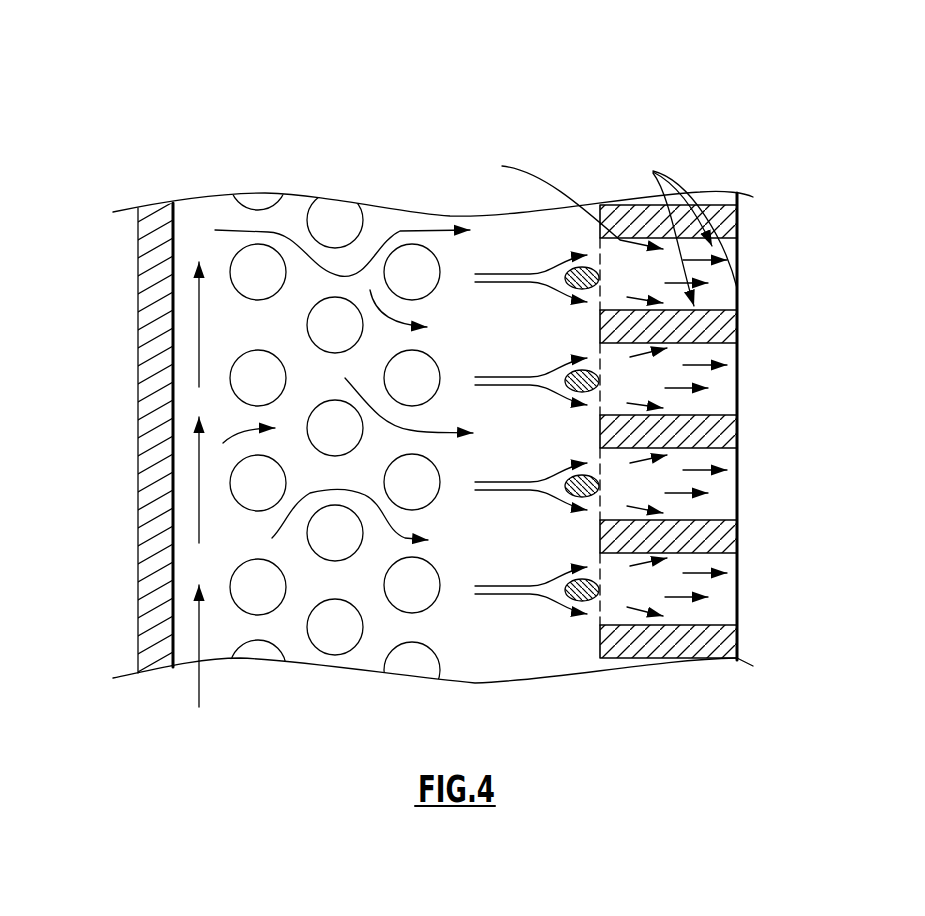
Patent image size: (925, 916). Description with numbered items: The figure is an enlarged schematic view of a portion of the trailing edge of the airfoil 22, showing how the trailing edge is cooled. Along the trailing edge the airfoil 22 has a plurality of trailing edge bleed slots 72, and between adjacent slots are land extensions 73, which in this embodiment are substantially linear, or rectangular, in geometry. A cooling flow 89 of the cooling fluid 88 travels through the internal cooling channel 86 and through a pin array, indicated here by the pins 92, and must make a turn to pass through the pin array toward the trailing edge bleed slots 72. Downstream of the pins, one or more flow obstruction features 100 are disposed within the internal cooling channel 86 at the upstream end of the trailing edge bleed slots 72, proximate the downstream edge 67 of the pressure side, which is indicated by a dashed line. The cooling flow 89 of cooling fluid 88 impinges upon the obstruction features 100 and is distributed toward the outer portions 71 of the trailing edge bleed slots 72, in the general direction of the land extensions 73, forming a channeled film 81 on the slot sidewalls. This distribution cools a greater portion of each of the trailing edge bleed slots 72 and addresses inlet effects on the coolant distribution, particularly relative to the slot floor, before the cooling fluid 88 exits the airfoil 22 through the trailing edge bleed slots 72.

The airfoil 22 is at (115, 74).
The internal cooling channel 86 is at (193, 223).
The pins 92 is at (333, 220).
The cooling fluid 88 is at (375, 438).
The cooling flow 89 is at (416, 229).
The flow obstruction feature 100 is at (566, 292).
The downstream edge 67 is at (607, 610).
The land extension 73 is at (736, 220).
The trailing edge bleed slot 72 is at (723, 276).
The outer portion 71 is at (680, 232).
The channeled film 81 is at (712, 310).